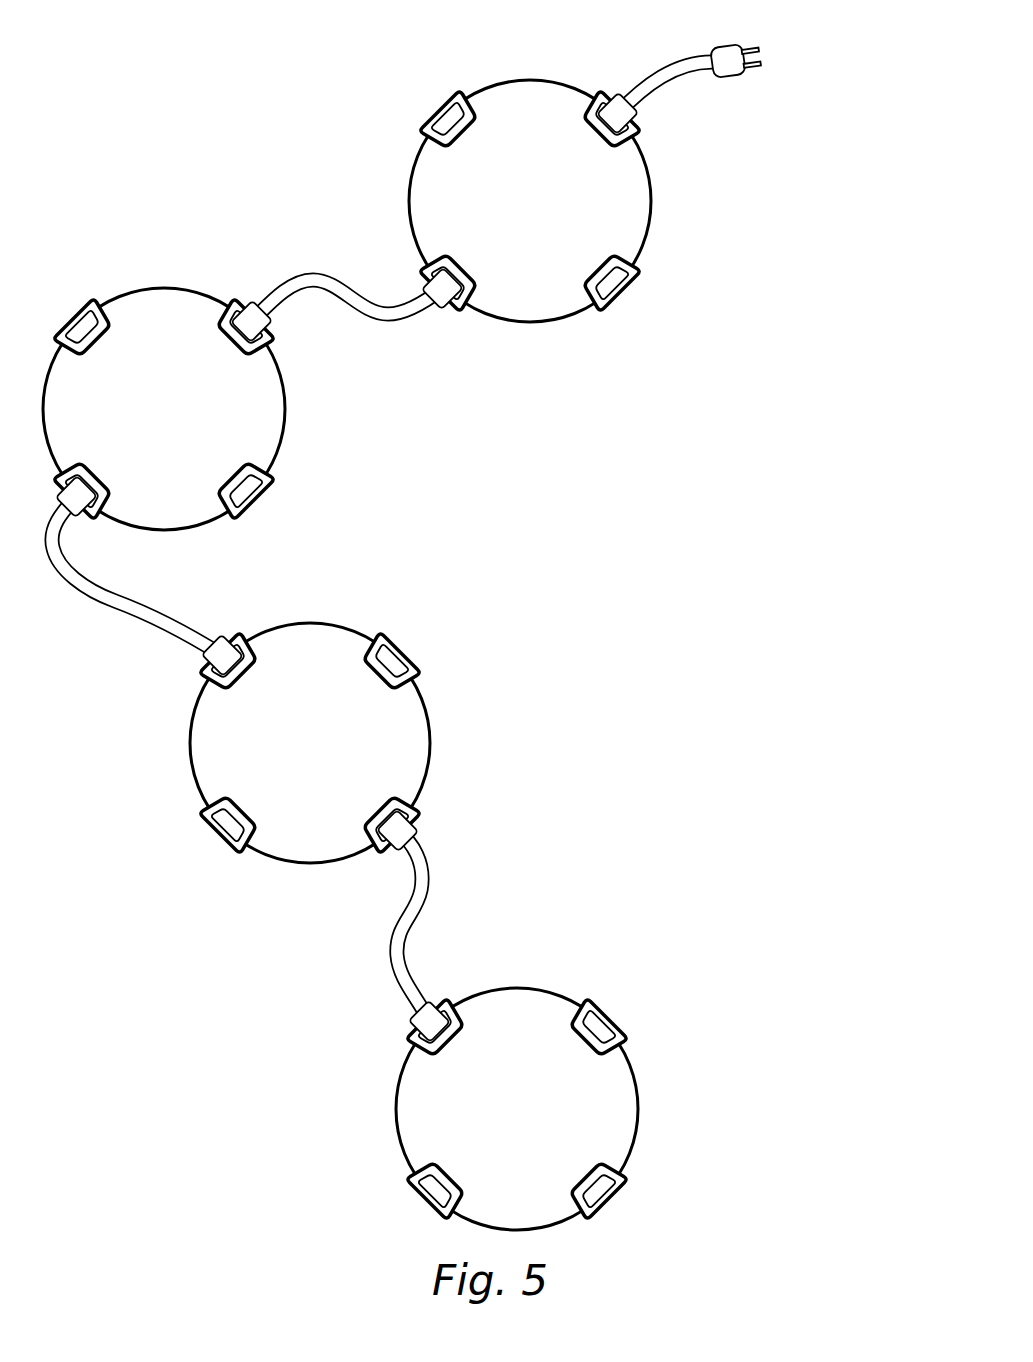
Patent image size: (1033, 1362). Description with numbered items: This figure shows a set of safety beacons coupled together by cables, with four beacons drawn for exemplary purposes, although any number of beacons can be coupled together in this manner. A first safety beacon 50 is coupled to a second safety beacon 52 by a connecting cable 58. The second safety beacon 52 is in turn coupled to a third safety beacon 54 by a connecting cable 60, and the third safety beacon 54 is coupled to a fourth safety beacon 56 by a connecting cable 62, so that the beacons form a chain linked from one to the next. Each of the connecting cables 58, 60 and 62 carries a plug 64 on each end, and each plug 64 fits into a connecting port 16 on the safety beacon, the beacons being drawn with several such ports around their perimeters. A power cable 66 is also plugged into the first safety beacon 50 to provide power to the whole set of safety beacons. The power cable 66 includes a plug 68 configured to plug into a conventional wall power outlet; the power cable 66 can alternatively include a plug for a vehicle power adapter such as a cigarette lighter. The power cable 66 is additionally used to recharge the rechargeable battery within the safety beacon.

The connecting port 16 is at (470, 303).
The first safety beacon 50 is at (651, 174).
The second safety beacon 52 is at (286, 410).
The third safety beacon 54 is at (430, 740).
The fourth safety beacon 56 is at (638, 1107).
The connecting cable 58 is at (401, 321).
The connecting cable 60 is at (132, 596).
The connecting cable 62 is at (413, 936).
The plug 64 is at (427, 286).
The power cable 66 is at (663, 70).
The plug 68 is at (728, 46).